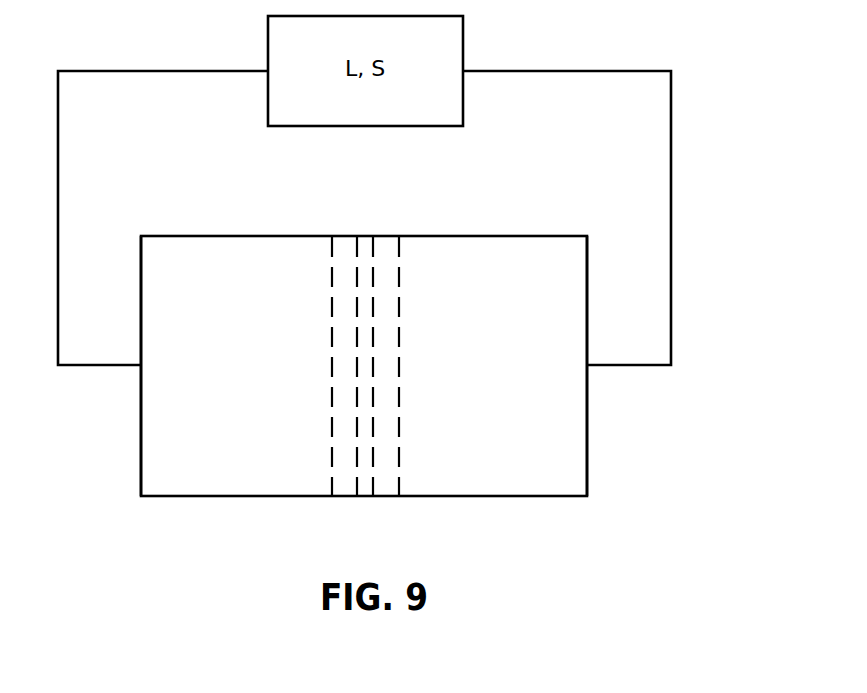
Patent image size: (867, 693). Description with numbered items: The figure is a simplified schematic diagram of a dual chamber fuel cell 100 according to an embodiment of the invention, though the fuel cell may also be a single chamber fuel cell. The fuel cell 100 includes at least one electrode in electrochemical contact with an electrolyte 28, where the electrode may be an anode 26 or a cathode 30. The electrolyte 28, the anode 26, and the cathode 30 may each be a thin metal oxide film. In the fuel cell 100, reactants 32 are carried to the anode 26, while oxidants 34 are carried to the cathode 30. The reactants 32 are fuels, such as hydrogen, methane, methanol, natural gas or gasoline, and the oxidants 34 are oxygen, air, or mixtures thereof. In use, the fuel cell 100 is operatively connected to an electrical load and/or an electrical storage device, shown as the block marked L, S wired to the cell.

The fuel cell 100 is at (610, 424).
The anode 26 is at (332, 366).
The electrolyte 28 is at (357, 484).
The cathode 30 is at (399, 306).
The reactants 32 is at (235, 448).
The oxidants 34 is at (504, 448).